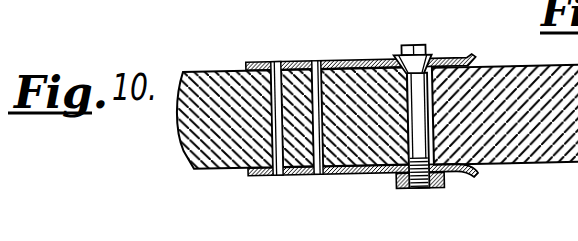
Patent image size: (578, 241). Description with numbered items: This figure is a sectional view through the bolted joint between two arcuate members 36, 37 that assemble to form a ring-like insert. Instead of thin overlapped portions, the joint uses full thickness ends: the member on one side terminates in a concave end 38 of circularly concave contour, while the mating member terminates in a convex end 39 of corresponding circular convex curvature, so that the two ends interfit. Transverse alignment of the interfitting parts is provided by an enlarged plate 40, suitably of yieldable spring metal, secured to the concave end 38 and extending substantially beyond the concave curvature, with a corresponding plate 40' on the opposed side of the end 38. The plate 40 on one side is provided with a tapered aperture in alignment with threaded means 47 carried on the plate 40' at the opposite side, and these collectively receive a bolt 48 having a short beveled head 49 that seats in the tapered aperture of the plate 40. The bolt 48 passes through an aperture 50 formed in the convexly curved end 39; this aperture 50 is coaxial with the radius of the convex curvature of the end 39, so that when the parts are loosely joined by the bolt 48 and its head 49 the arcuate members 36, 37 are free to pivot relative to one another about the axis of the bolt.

The arcuate member 36 is at (203, 170).
The arcuate member 37 is at (517, 163).
The concave end 38 is at (292, 145).
The convex end 39 is at (320, 142).
The plate 40 is at (361, 43).
The plate 40' is at (355, 195).
The threaded means 47 is at (437, 187).
The bolt 48 is at (418, 188).
The beveled head 49 is at (427, 45).
The aperture 50 is at (400, 98).